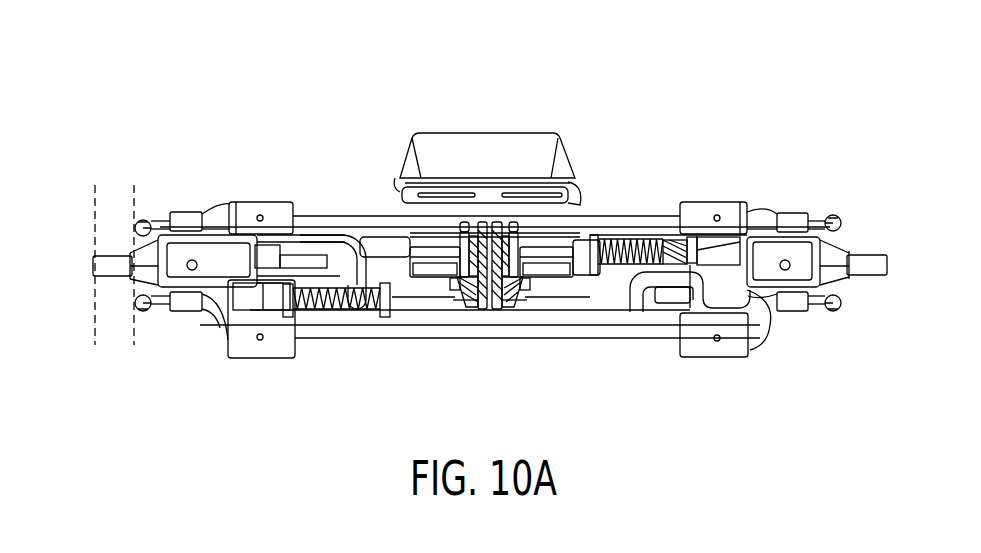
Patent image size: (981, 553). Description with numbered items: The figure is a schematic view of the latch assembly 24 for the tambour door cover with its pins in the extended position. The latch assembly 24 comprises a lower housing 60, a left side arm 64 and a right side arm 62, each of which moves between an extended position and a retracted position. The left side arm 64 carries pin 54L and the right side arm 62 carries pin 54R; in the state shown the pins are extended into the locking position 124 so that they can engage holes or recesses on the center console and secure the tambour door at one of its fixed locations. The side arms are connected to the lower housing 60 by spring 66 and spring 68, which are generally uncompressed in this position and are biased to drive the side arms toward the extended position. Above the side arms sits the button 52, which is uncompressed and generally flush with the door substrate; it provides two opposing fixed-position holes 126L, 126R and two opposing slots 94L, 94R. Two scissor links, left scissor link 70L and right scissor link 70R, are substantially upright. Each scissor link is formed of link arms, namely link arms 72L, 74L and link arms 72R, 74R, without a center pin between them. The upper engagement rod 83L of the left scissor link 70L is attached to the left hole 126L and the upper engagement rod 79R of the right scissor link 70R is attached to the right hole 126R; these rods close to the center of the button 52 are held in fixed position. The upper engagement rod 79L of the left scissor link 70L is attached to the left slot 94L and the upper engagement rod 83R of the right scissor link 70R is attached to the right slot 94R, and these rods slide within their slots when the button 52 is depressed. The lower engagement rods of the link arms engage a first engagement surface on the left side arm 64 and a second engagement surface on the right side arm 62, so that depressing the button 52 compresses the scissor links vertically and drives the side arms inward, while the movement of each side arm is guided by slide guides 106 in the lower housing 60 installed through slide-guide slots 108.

The latch assembly 24 is at (759, 84).
The button 52 is at (437, 147).
The pin 54L is at (112, 262).
The pin 54R is at (860, 262).
The lower housing 60 is at (250, 347).
The right side arm 62 is at (633, 292).
The left side arm 64 is at (337, 252).
The spring 66 is at (648, 242).
The spring 68 is at (333, 305).
The left scissor link 70L is at (481, 322).
The right scissor link 70R is at (504, 322).
The link arm 72L is at (450, 281).
The link arm 72R is at (507, 283).
The link arm 74L is at (468, 283).
The link arm 74R is at (525, 283).
The upper engagement rod 79L is at (470, 230).
The upper engagement rod 79R is at (508, 232).
The upper engagement rod 83L is at (478, 232).
The upper engagement rod 83R is at (525, 232).
The slot 94L is at (464, 222).
The slot 94R is at (516, 222).
The slide guide 106 is at (307, 266).
The slide-guide slot 108 is at (247, 198).
The locking position 124 is at (84, 195).
The fixed-position hole 126L is at (486, 222).
The fixed-position hole 126R is at (496, 222).